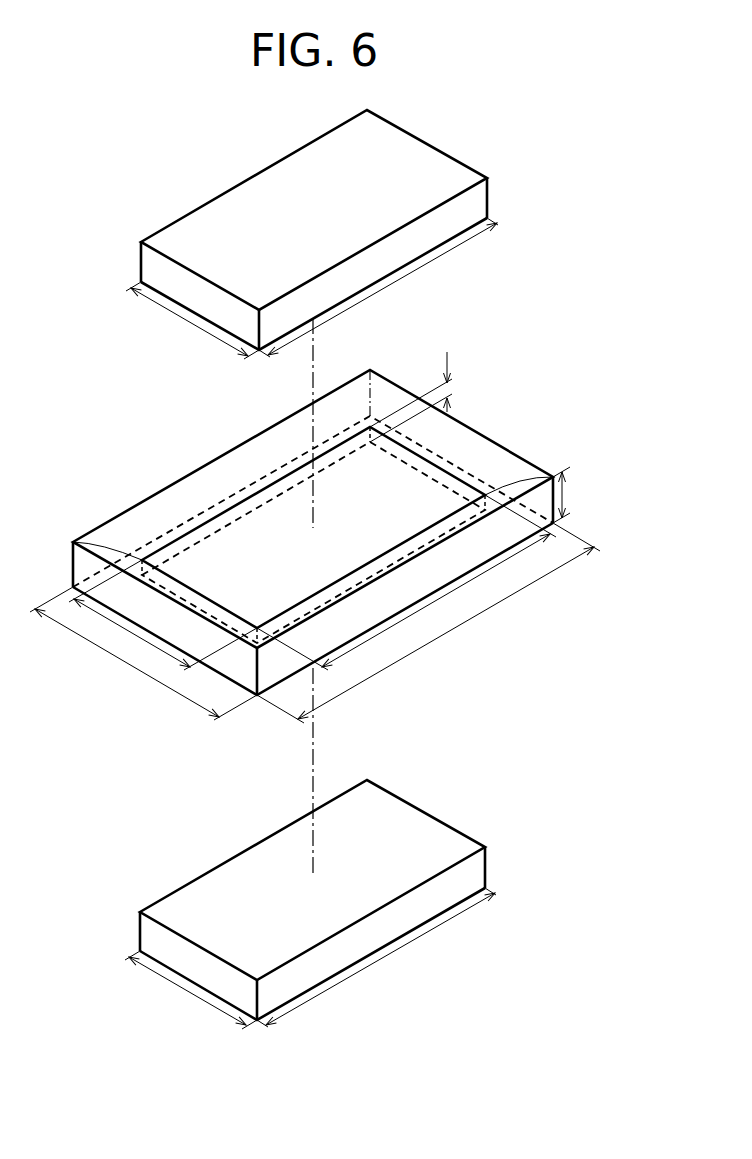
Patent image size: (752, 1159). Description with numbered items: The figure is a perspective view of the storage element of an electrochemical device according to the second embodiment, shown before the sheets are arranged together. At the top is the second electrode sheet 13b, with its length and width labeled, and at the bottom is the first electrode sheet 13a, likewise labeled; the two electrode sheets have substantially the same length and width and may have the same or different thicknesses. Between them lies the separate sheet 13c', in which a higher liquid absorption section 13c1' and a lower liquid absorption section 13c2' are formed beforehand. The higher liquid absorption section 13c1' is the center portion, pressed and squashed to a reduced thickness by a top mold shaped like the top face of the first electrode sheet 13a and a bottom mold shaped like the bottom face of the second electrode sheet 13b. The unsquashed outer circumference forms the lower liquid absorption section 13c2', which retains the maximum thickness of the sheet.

The first electrode sheet 13a is at (183, 900).
The second electrode sheet 13b is at (185, 233).
The separate sheet 13c' is at (317, 537).
The higher liquid absorption section 13c1' is at (312, 510).
The lower liquid absorption section 13c2' is at (317, 546).